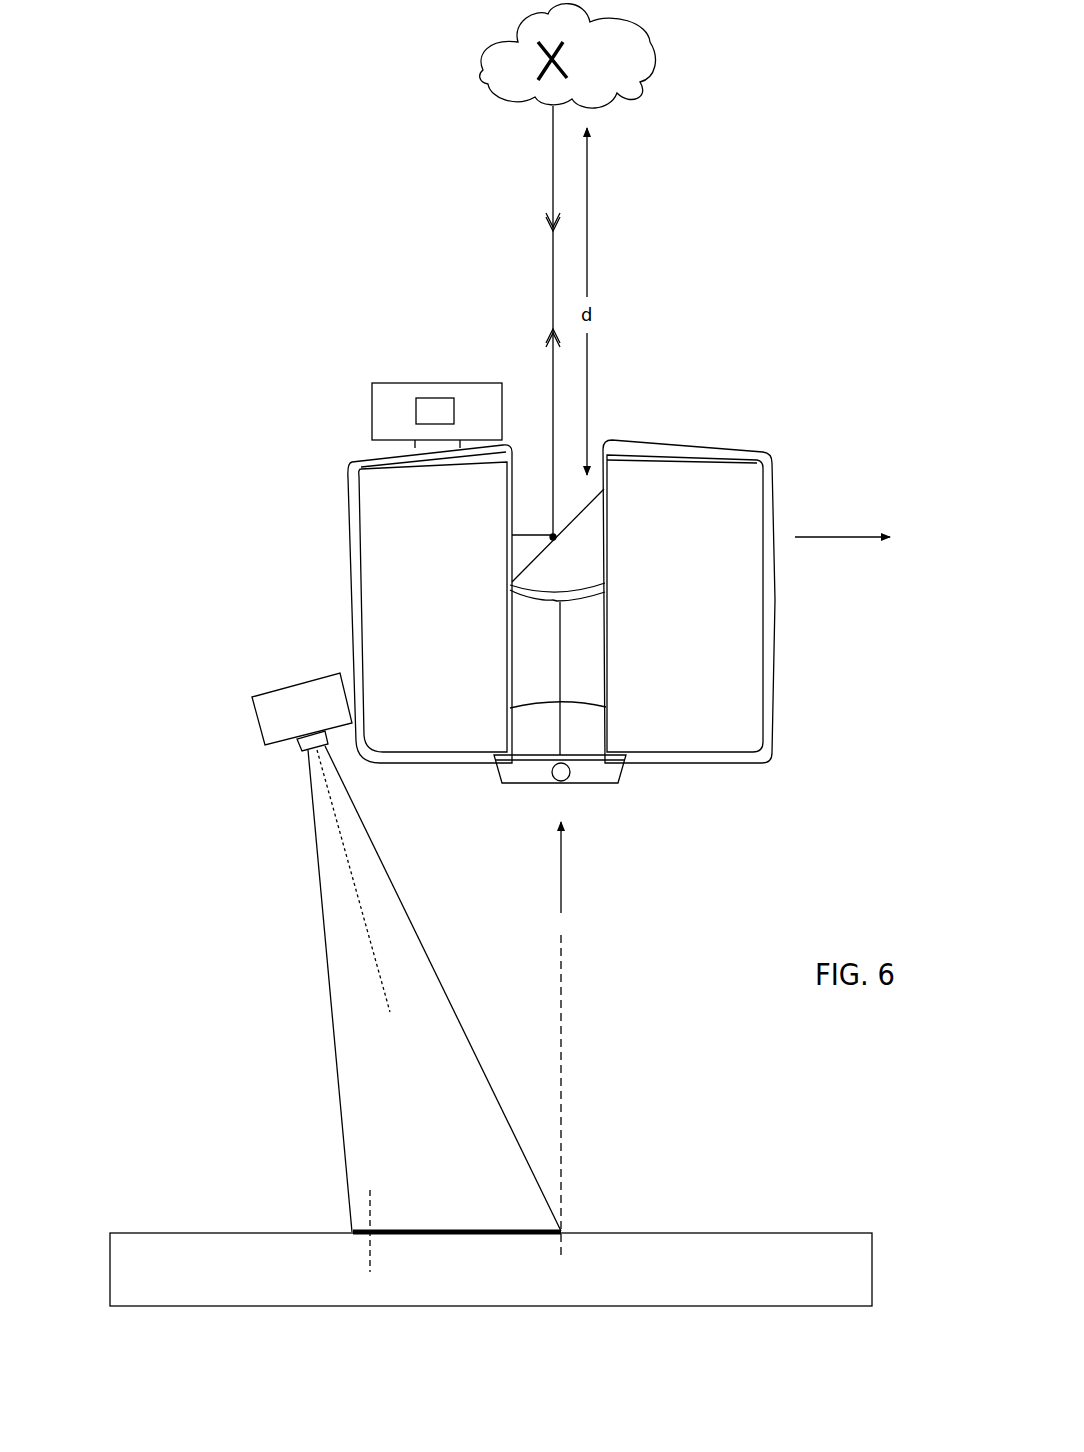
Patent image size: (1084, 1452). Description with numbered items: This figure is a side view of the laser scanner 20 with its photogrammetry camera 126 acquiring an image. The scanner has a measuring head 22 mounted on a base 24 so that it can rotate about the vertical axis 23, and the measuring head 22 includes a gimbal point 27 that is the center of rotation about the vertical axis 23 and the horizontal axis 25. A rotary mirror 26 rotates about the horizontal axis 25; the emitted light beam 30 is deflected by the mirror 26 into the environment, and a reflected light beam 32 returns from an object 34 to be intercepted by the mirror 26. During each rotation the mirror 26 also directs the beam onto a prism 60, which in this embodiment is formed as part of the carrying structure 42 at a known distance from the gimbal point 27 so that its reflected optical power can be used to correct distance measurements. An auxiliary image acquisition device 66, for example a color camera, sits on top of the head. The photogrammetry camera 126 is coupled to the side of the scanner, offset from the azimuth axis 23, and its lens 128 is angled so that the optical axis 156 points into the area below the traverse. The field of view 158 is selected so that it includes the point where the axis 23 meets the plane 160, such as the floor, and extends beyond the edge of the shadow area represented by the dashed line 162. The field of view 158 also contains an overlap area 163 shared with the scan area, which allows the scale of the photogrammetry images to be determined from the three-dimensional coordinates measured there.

The laser scanner 20 is at (408, 155).
The measuring head 22 is at (760, 392).
The vertical axis 23 is at (562, 890).
The base 24 is at (495, 767).
The horizontal axis 25 is at (828, 535).
The rotary mirror 26 is at (537, 562).
The gimbal point 27 is at (557, 537).
The emitted light beam 30 is at (552, 358).
The reflected light beam 32 is at (550, 200).
The object 34 is at (632, 23).
The carrying structure 42 is at (648, 815).
The prism 60 is at (562, 603).
The auxiliary image acquisition device 66 is at (400, 346).
The photogrammetry camera 126 is at (272, 690).
The lens 128 is at (290, 746).
The optical axis 156 is at (370, 940).
The field of view 158 is at (480, 1230).
The plane 160 is at (820, 1233).
The dashed line 162 is at (370, 1230).
The overlap area 163 is at (358, 1236).